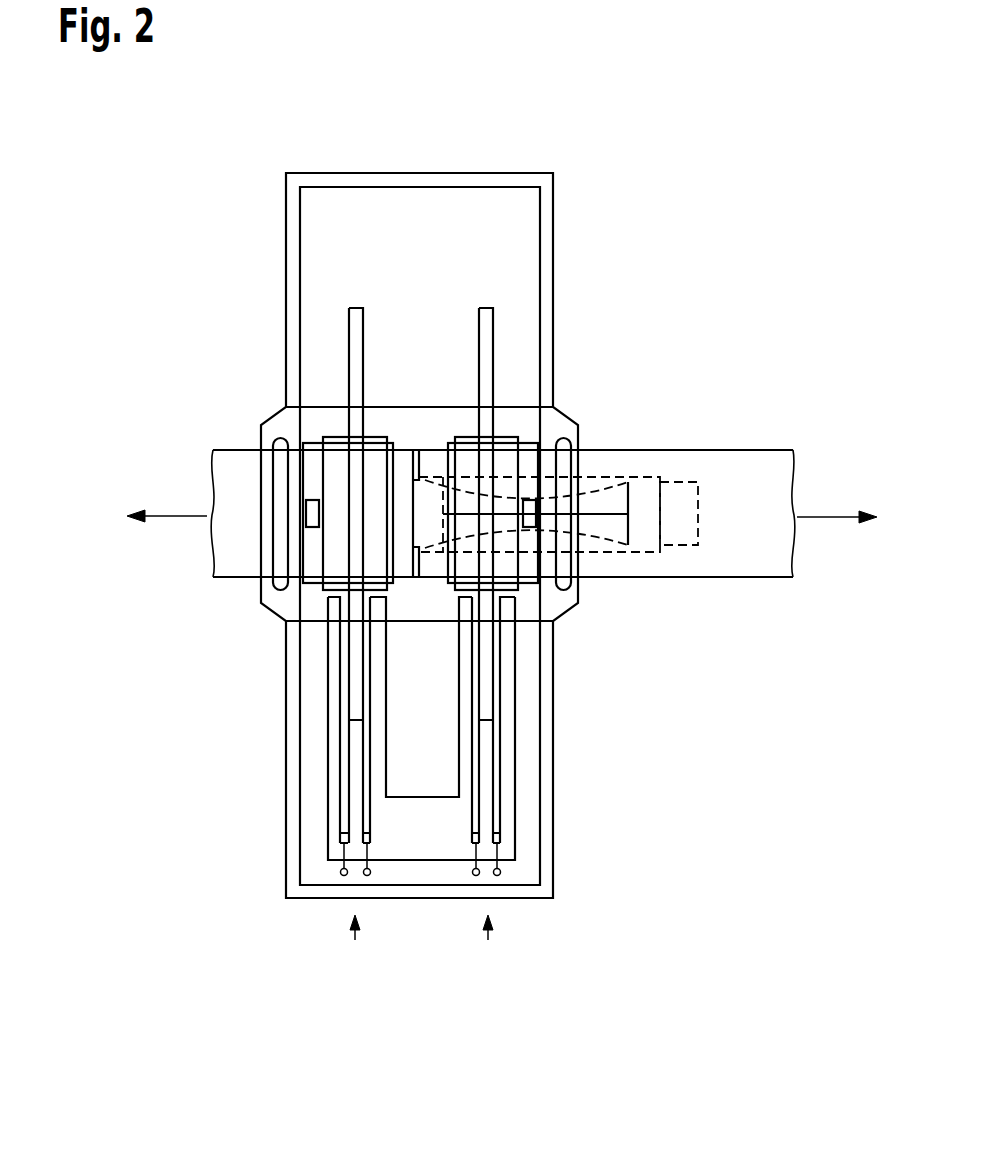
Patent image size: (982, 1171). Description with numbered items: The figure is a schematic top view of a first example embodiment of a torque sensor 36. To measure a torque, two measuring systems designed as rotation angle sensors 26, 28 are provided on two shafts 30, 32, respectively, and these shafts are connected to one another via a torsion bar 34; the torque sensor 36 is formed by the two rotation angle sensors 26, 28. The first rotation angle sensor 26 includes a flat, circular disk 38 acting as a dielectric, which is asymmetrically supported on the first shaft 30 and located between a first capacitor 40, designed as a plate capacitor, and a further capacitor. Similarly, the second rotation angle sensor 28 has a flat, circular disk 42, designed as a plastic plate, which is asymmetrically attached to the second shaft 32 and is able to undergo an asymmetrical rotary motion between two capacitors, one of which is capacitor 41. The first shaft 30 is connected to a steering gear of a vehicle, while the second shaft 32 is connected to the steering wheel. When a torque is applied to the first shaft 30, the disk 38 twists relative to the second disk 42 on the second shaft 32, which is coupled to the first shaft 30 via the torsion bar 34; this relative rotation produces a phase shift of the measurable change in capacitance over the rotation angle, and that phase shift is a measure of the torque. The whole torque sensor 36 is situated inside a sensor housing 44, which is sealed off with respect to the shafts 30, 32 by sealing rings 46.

The first rotation angle sensor 26 is at (355, 940).
The second rotation angle sensor 28 is at (488, 940).
The first shaft 30 is at (228, 547).
The second shaft 32 is at (762, 473).
The torsion bar 34 is at (607, 502).
The torque sensor 36 is at (242, 262).
The disk 38 is at (357, 313).
The first capacitor 40 is at (323, 775).
The capacitor 41 is at (520, 778).
The disk 42 is at (488, 313).
The sensor housing 44 is at (528, 180).
The sealing rings 46 is at (282, 473).